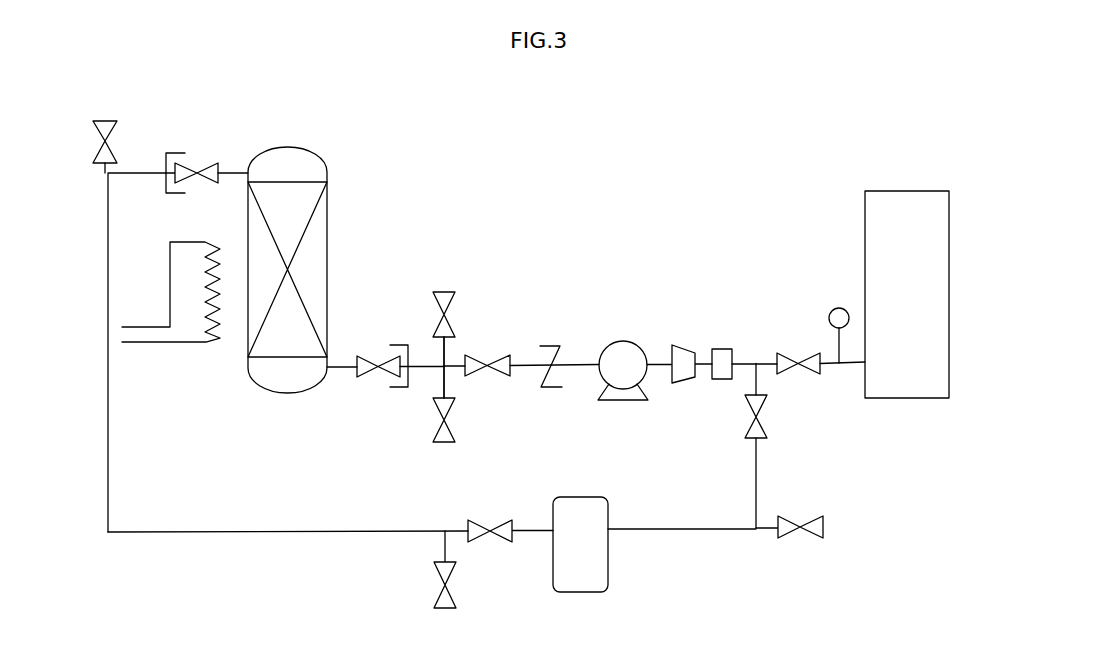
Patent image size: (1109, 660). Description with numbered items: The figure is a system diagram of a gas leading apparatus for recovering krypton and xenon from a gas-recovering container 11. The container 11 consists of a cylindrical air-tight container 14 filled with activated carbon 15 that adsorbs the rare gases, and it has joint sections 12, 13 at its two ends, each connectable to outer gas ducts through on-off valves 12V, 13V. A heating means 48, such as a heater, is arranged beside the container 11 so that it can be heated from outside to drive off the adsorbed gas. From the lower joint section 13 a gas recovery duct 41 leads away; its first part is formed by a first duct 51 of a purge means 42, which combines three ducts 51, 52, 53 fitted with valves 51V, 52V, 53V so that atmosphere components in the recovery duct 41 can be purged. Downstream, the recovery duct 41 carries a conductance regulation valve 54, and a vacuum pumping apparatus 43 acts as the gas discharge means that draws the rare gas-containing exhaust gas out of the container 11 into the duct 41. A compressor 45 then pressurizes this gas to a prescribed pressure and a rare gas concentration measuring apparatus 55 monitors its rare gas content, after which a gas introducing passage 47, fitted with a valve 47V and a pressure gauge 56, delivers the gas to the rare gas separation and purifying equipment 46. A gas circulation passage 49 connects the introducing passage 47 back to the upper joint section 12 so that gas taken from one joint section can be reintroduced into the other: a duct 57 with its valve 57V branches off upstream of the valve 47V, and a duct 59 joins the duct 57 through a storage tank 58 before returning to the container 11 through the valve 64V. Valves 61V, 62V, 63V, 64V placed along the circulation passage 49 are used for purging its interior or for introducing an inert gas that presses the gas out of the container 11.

The gas-recovering container 11 is at (319, 236).
The joint section 12 is at (230, 171).
The on-off valve 12V is at (192, 164).
The joint section 13 is at (338, 370).
The on-off valve 13V is at (393, 359).
The air-tight container 14 is at (327, 202).
The activated carbon 15 is at (313, 265).
The gas recovery duct 41 is at (527, 363).
The purge means 42 is at (422, 397).
The vacuum pumping apparatus 43 is at (625, 341).
The compressor 45 is at (683, 347).
The rare gas separation and purifying equipment 46 is at (907, 191).
The gas introducing passage 47 is at (853, 366).
The valve 47V is at (783, 355).
The heating means 48 is at (212, 345).
The gas circulation passage 49 is at (235, 527).
The first duct 51 is at (432, 363).
The valve 51V is at (494, 357).
The duct 52 is at (446, 352).
The valve 52V is at (446, 292).
The duct 53 is at (446, 373).
The valve 53V is at (454, 432).
The conductance regulation valve 54 is at (548, 388).
The rare gas concentration measuring apparatus 55 is at (722, 379).
The pressure gauge 56 is at (836, 309).
The duct 57 is at (757, 462).
The valve 57V is at (759, 422).
The storage tank 58 is at (610, 572).
The duct 59 is at (293, 533).
The valve 61V is at (790, 535).
The valve 62V is at (477, 521).
The valve 63V is at (456, 596).
The valve 64V is at (132, 113).